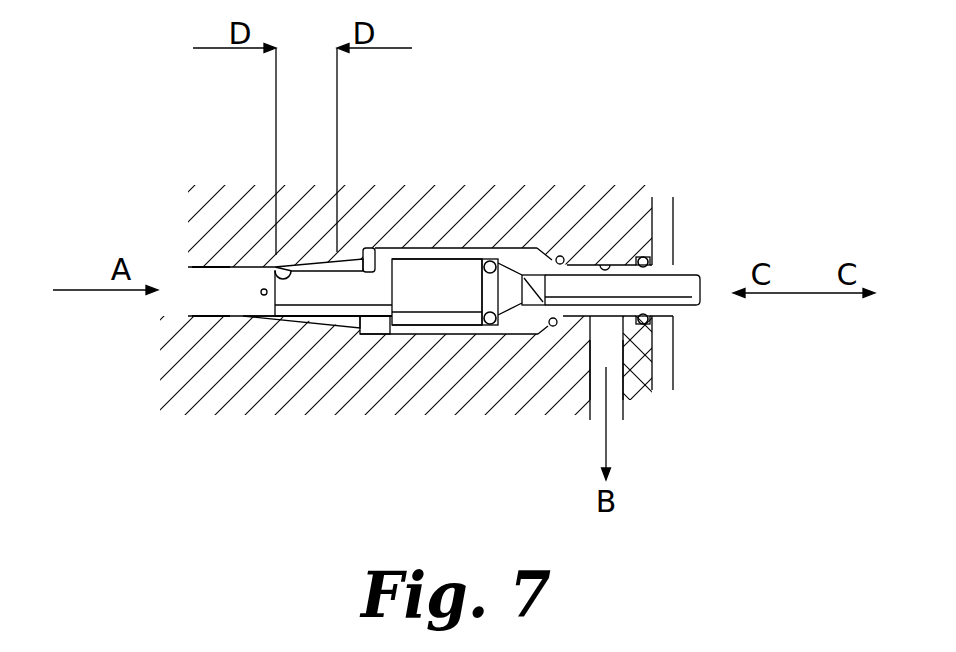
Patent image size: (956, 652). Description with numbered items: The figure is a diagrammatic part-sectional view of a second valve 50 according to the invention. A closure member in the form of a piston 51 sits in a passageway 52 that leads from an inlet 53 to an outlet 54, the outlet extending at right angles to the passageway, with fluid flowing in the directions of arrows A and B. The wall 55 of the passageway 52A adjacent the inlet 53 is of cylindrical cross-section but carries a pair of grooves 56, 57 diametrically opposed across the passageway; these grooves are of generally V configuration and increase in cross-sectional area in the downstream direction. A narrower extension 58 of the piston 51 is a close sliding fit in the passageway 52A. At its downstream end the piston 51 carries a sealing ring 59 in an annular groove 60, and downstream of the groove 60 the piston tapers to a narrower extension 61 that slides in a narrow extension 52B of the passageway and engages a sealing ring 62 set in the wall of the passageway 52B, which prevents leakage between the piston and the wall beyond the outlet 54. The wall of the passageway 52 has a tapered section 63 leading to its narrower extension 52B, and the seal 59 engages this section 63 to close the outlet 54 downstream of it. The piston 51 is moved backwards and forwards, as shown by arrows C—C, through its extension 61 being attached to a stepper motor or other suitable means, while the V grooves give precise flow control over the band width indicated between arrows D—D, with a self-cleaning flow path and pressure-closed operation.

The valve 50 is at (480, 185).
The piston 51 is at (443, 298).
The passageway 52 is at (377, 334).
The passageway adjacent inlet 52A is at (376, 252).
The narrow extension of passageway 52B is at (605, 258).
The inlet 53 is at (190, 280).
The outlet 54 is at (612, 354).
The wall 55 is at (273, 268).
The groove 56 is at (310, 322).
The groove 57 is at (328, 266).
The narrower extension of piston 58 is at (331, 312).
The sealing ring 59 is at (512, 260).
The annular groove 60 is at (498, 300).
The narrower extension of piston 61 is at (676, 288).
The sealing ring 62 is at (650, 318).
The tapered section 63 is at (550, 256).